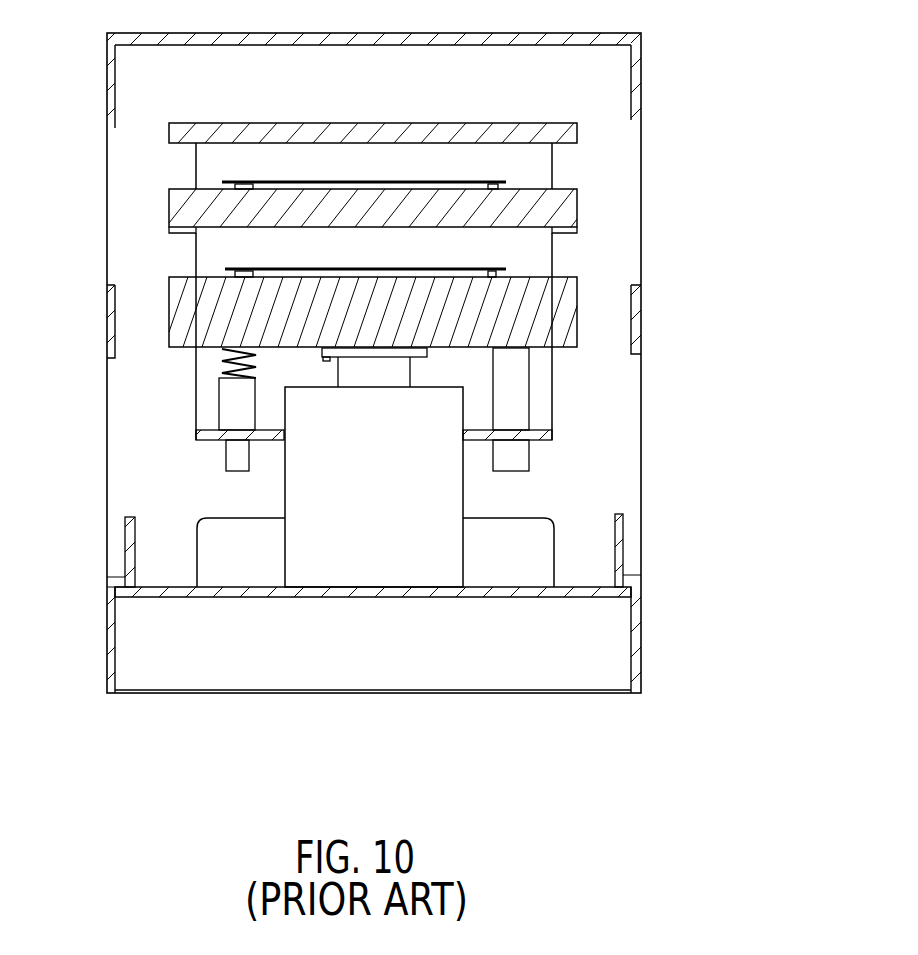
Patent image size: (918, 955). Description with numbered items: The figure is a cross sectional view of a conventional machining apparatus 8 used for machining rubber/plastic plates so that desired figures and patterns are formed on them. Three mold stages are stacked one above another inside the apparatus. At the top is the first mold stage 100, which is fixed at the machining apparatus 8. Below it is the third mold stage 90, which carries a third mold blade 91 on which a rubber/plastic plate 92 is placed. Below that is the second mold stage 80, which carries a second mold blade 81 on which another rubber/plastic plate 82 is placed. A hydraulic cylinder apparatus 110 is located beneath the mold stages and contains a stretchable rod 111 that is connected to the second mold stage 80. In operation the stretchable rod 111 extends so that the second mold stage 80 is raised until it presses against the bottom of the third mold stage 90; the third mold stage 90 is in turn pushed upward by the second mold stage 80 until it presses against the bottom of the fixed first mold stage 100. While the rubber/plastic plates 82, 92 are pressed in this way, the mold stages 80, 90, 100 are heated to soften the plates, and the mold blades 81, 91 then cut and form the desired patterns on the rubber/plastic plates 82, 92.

The machining apparatus 8 is at (733, 367).
The second mold stage 80 is at (538, 285).
The second mold blade 81 is at (237, 274).
The rubber/plastic plate 82 is at (302, 268).
The third mold stage 90 is at (263, 207).
The third mold blade 91 is at (247, 184).
The rubber/plastic plate 92 is at (302, 181).
The first mold stage 100 is at (540, 130).
The hydraulic cylinder apparatus 110 is at (438, 463).
The stretchable rod 111 is at (398, 366).